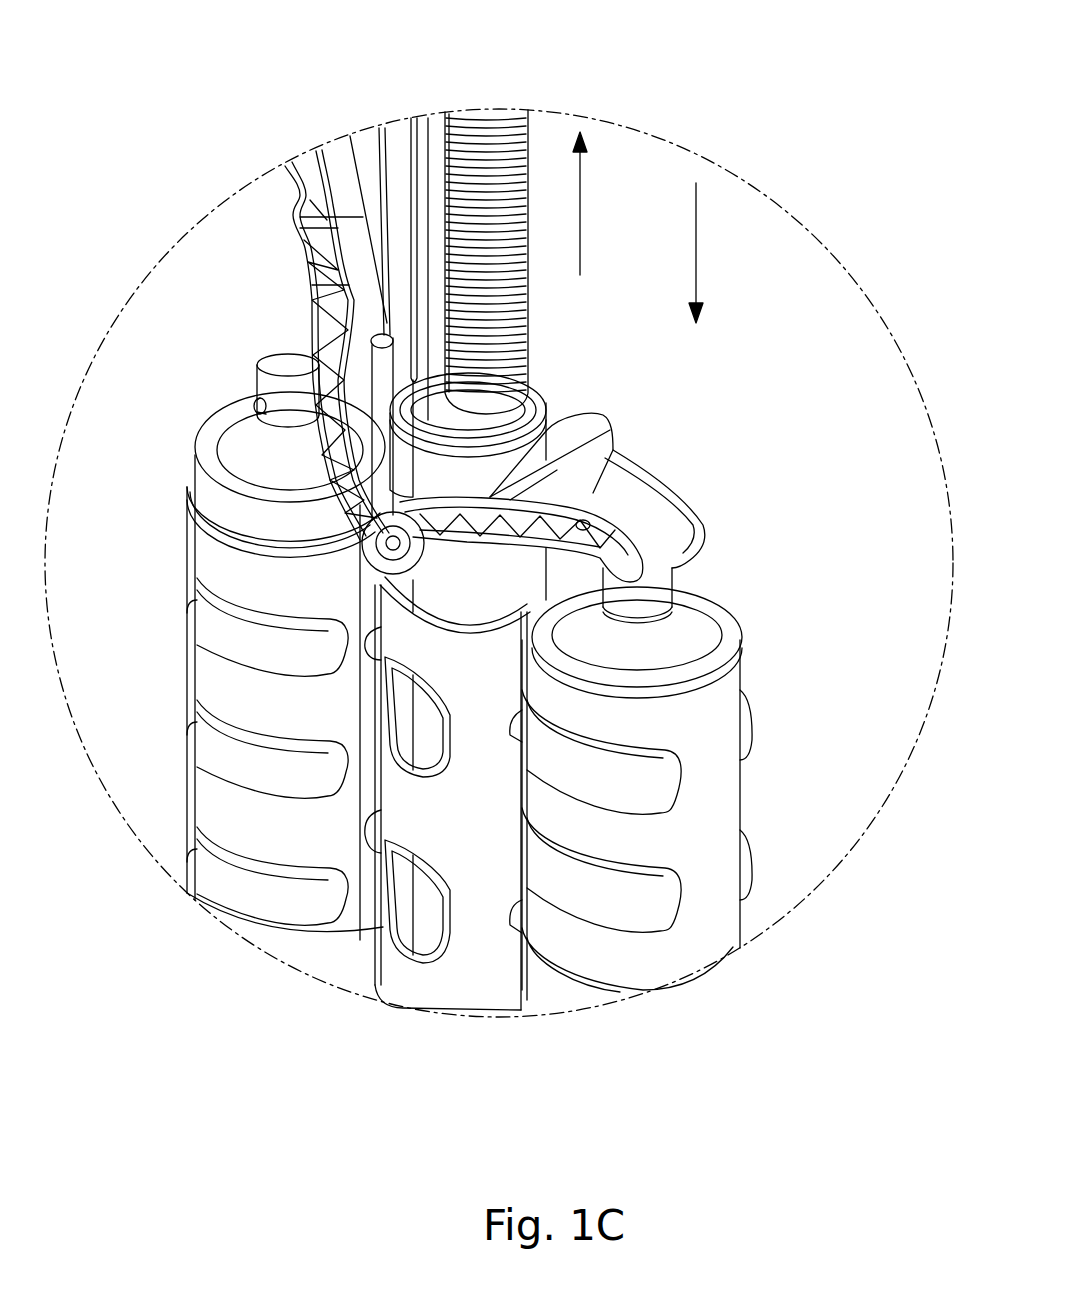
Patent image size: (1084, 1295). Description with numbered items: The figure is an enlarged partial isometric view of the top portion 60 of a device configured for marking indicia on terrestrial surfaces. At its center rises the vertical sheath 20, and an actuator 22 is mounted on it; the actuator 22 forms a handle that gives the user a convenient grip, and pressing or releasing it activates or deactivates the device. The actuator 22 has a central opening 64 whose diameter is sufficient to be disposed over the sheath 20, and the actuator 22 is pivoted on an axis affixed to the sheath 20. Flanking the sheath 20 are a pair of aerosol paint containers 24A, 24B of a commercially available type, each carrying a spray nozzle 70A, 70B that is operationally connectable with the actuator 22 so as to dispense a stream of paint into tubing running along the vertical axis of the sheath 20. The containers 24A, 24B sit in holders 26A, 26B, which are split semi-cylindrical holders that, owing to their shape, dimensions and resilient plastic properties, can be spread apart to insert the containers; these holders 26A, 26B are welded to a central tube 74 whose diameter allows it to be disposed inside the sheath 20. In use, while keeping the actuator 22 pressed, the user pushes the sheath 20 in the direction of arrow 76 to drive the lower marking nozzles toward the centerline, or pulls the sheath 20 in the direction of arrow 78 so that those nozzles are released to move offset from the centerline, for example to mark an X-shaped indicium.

The sheath 20 is at (530, 360).
The actuator 22 is at (305, 210).
The aerosol paint container 24A is at (699, 743).
The aerosol paint container 24B is at (250, 640).
The holder 26A is at (628, 900).
The holder 26B is at (257, 827).
The top portion 60 is at (798, 147).
The central opening 64 is at (375, 385).
The spray nozzle 70A is at (650, 593).
The spray nozzle 70B is at (297, 370).
The central tube 74 is at (447, 998).
The arrow 76 is at (697, 237).
The arrow 78 is at (580, 203).